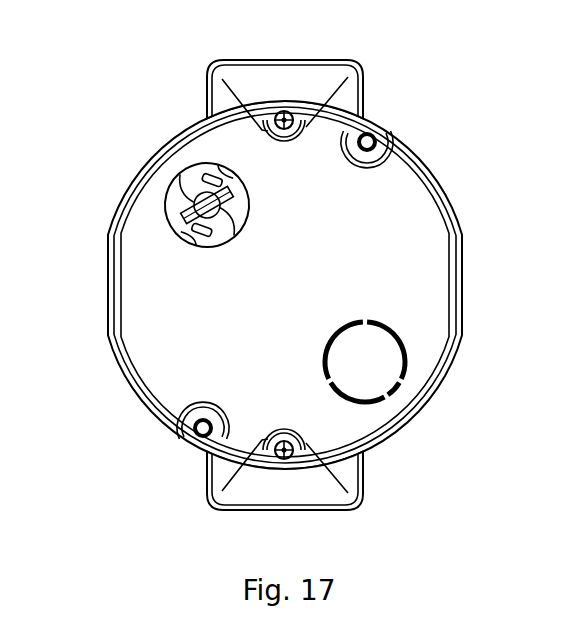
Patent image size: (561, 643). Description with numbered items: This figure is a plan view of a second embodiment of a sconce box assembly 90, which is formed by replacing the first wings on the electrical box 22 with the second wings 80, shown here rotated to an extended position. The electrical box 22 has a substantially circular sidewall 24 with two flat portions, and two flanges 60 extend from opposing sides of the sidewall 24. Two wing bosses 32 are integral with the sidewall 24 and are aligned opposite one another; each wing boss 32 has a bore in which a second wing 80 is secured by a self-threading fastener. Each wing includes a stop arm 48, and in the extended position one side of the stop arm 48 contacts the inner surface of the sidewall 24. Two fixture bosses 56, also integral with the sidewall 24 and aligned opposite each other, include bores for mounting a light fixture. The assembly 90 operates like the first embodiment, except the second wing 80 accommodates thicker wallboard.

The sconce box assembly 90 is at (108, 137).
The electrical box 22 is at (433, 400).
The sidewall 24 is at (446, 195).
The second wing 80 is at (284, 70).
The flange 60 is at (358, 74).
The stop arm 48 is at (257, 128).
The wing boss 32 is at (285, 145).
The fixture boss 56 is at (356, 163).